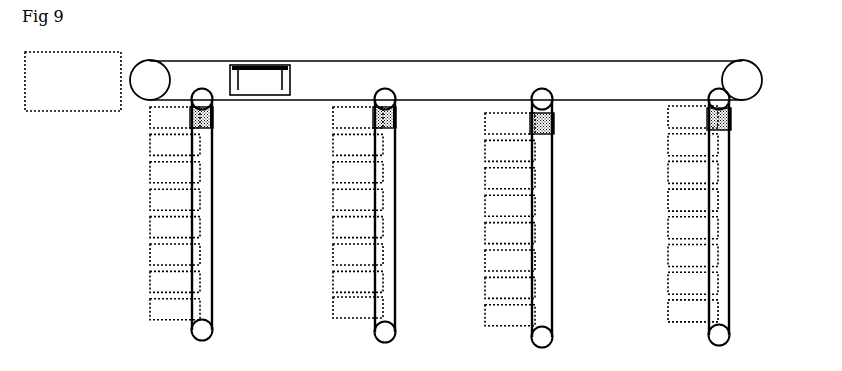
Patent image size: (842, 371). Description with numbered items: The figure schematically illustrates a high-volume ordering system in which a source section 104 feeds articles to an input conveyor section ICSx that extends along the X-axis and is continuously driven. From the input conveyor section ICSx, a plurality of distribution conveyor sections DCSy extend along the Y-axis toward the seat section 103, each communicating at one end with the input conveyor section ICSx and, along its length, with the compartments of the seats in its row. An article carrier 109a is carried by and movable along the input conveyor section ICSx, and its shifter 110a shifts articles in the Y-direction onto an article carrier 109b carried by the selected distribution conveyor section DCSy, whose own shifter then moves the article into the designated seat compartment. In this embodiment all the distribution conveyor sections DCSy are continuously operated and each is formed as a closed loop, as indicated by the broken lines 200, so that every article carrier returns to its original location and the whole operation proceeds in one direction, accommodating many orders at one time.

The source section 104 is at (95, 112).
The seat section 103 is at (150, 179).
The article carrier 109a is at (238, 66).
The article carrier 109b is at (214, 110).
The shifter 110a is at (290, 73).
The broken lines 200 is at (213, 213).
The input conveyor section ICSx is at (520, 101).
The distribution conveyor section DCSy is at (213, 260).